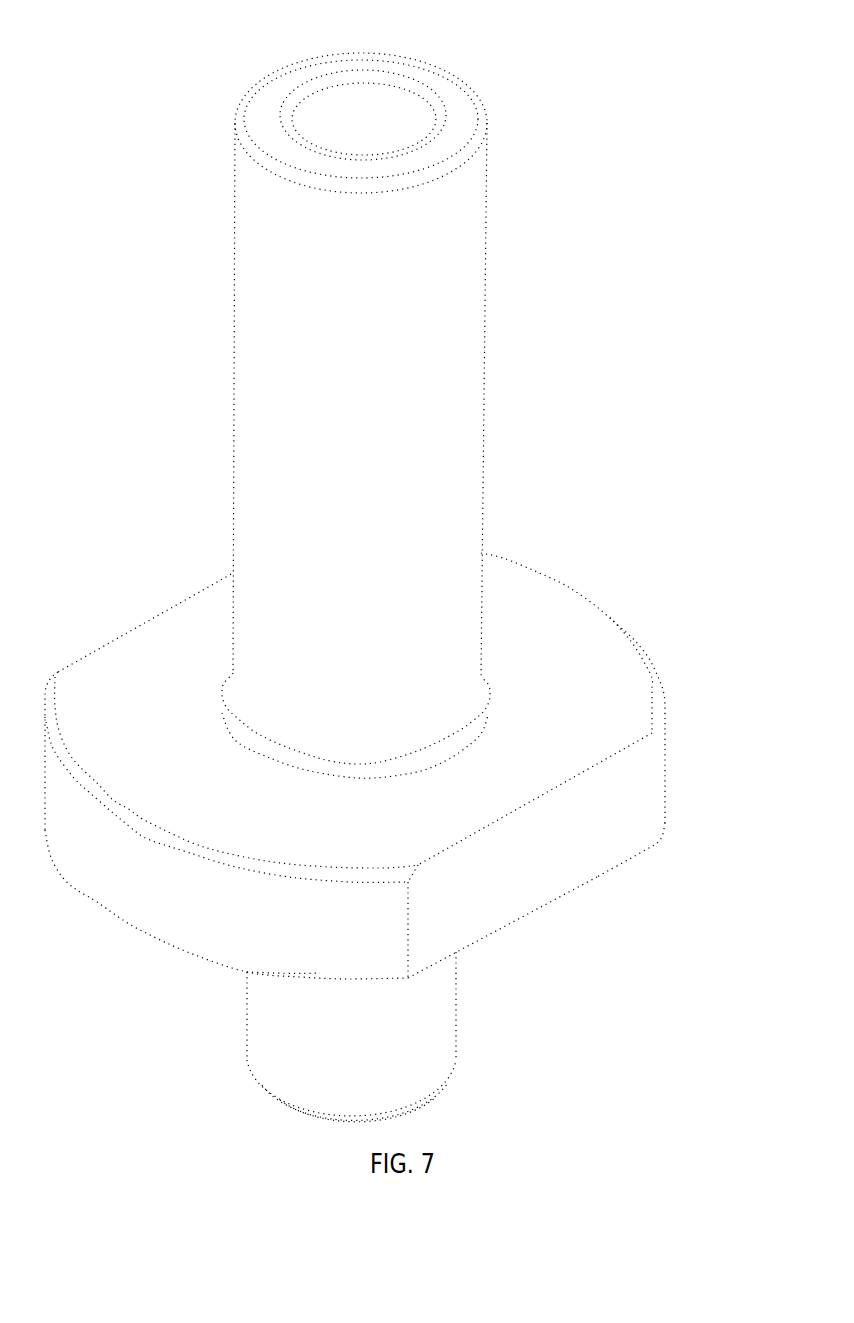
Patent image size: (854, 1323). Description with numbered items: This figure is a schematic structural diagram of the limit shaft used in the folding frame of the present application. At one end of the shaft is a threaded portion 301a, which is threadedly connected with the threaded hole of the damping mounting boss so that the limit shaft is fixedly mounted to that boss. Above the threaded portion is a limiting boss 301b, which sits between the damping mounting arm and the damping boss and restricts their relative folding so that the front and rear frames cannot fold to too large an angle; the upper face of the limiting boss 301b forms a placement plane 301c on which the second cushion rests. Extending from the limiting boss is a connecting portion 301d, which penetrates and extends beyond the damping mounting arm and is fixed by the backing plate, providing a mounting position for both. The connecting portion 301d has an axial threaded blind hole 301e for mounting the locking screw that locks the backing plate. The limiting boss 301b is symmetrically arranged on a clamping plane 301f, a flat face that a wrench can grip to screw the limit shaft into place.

The threaded portion 301a is at (388, 1032).
The limiting boss 301b is at (552, 753).
The placement plane 301c is at (540, 670).
The connecting portion 301d is at (437, 305).
The threaded blind hole 301e is at (368, 140).
The clamping plane 301f is at (537, 872).